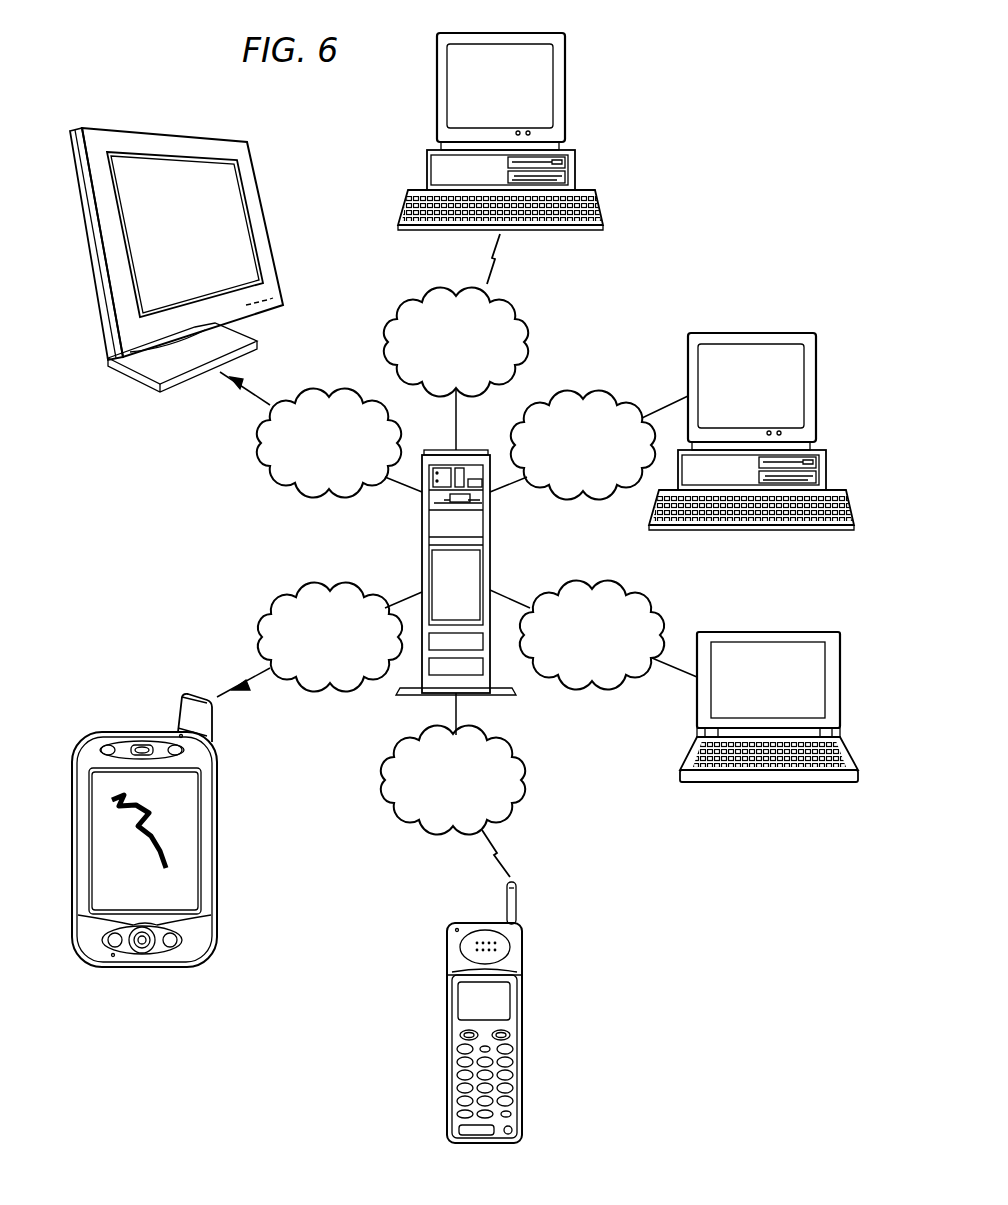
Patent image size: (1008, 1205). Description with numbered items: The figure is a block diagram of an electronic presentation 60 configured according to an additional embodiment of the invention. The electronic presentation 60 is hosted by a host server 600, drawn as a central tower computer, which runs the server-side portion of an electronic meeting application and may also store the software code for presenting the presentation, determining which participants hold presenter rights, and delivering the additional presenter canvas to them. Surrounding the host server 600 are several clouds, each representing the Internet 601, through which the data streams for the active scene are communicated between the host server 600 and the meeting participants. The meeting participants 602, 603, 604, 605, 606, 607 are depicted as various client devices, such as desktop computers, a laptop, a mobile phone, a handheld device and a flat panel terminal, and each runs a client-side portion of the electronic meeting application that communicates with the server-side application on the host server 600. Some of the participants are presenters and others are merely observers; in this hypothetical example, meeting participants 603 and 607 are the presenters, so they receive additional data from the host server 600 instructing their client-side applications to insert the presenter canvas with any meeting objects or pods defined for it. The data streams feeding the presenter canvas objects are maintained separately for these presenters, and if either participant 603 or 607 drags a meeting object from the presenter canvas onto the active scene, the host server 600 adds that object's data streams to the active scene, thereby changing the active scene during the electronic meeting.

The electronic presentation 60 is at (737, 84).
The host server 600 is at (422, 558).
The Internet 601 is at (457, 555).
The meeting participant 602 is at (565, 88).
The meeting participant 603 is at (754, 333).
The meeting participant 604 is at (770, 782).
The meeting participant 605 is at (522, 1030).
The meeting participant 606 is at (141, 970).
The meeting participant 607 is at (164, 138).